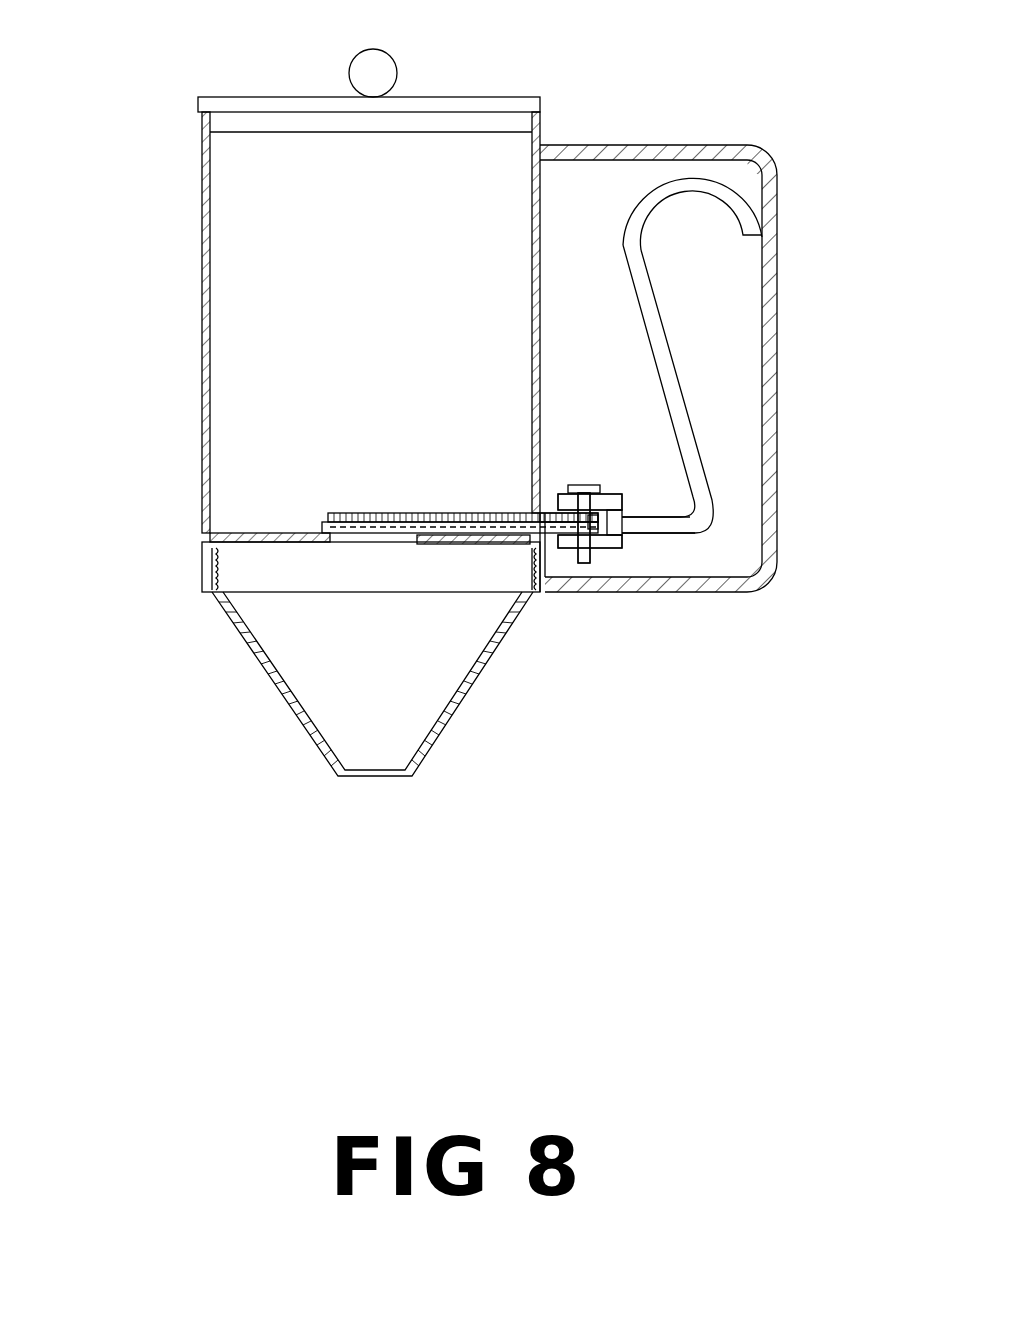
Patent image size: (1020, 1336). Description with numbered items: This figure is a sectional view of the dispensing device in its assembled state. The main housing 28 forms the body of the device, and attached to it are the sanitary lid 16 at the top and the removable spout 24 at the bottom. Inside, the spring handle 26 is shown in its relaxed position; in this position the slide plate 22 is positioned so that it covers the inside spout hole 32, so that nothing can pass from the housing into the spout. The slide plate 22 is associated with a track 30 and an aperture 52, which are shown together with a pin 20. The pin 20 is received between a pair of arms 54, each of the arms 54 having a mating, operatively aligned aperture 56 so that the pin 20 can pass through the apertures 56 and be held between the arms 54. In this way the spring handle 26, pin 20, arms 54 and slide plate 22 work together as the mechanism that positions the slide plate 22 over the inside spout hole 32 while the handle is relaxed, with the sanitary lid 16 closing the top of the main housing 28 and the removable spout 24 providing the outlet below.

The sanitary lid 16 is at (432, 97).
The main housing 28 is at (202, 215).
The spring handle 26 is at (667, 330).
The slide plate 22 is at (392, 512).
The aperture 52 is at (549, 512).
The pin 20 is at (580, 484).
The track 30 is at (320, 522).
The arms 54 is at (612, 494).
The apertures 56 is at (592, 497).
The inside spout hole 32 is at (375, 542).
The removable spout 24 is at (468, 690).